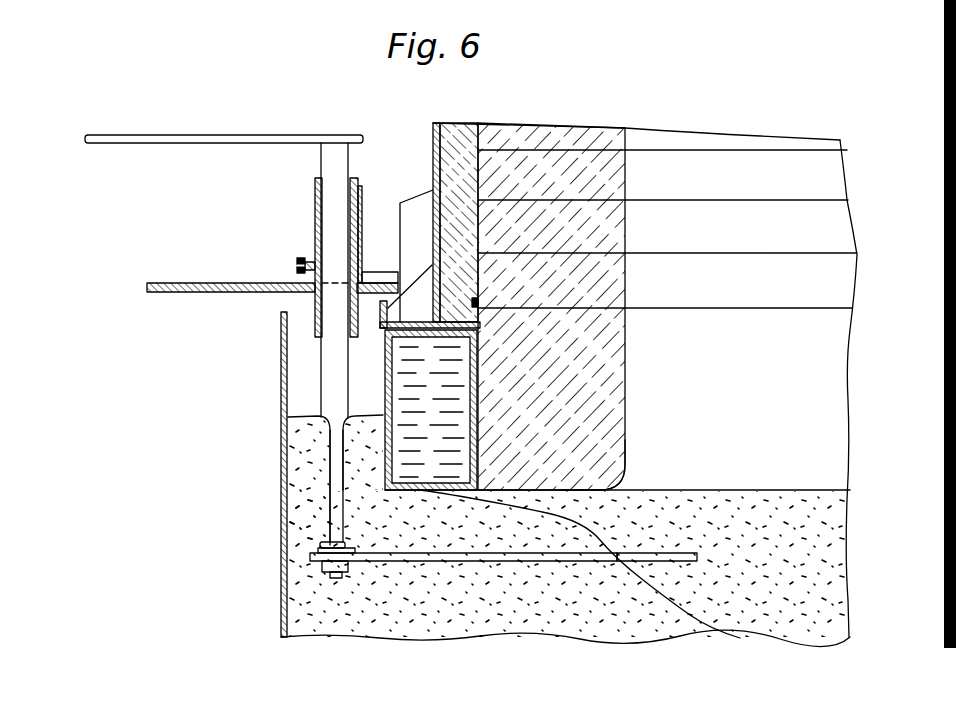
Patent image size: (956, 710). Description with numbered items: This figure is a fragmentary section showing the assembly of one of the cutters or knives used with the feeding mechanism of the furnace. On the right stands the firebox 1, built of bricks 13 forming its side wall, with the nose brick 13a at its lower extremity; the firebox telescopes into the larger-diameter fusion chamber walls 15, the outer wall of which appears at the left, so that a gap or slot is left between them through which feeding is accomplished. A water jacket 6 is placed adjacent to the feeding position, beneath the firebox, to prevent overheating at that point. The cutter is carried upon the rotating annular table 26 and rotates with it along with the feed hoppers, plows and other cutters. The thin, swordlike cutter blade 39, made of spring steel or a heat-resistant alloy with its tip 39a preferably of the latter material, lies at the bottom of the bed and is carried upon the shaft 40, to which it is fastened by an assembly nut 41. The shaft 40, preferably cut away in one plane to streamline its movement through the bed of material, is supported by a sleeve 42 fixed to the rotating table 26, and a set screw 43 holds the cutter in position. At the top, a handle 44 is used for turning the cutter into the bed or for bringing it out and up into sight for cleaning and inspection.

The firebox 1 is at (428, 128).
The water jacket 6 is at (415, 373).
The bricks 13 is at (622, 179).
The nose brick 13a is at (606, 433).
The fusion chamber walls 15 is at (281, 478).
The rotating annular table 26 is at (258, 283).
The cutter blade 39 is at (555, 553).
The tip 39a is at (659, 553).
The shaft 40 is at (324, 396).
The assembly nut 41 is at (322, 573).
The sleeve 42 is at (358, 178).
The set screw 43 is at (299, 259).
The handle 44 is at (138, 136).